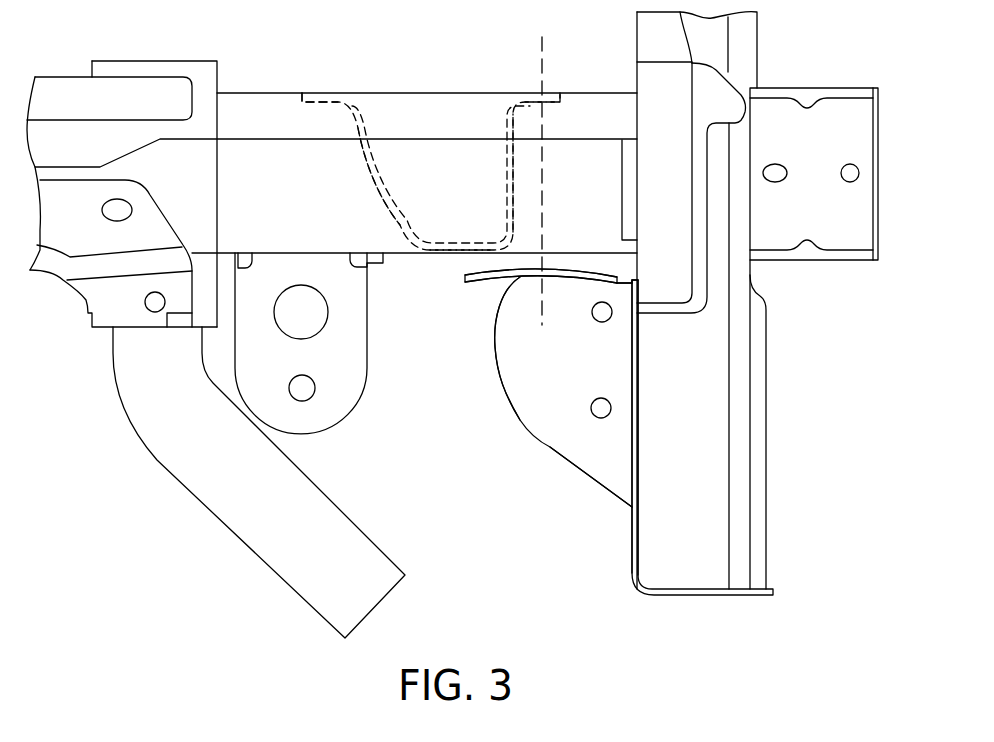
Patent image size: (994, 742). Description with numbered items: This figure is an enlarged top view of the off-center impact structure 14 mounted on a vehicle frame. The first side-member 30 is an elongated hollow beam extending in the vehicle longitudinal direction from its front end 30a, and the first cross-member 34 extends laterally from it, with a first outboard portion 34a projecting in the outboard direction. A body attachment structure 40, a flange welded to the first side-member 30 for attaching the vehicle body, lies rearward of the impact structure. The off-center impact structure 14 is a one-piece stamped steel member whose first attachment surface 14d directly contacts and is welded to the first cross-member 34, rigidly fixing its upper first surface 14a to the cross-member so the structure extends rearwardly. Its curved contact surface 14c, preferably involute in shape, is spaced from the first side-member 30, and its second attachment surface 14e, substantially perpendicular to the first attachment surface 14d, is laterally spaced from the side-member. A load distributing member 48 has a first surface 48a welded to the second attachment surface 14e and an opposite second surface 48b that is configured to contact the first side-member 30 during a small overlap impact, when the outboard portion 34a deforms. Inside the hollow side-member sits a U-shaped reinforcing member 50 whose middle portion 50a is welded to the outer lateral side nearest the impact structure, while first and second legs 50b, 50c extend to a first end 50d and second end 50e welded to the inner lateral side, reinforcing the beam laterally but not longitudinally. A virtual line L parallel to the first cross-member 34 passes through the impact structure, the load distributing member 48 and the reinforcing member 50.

The off-center impact structure 14 is at (552, 448).
The first surface 14a is at (615, 463).
The curved contact surface 14c is at (501, 390).
The first attachment surface 14d is at (634, 382).
The second attachment surface 14e is at (606, 277).
The first side-member 30 is at (252, 92).
The front end 30a is at (878, 135).
The first cross-member 34 is at (768, 460).
The first outboard portion 34a is at (708, 596).
The body attachment structure 40 is at (352, 407).
The load distributing member 48 is at (488, 275).
The first surface 48a is at (478, 283).
The second surface 48b is at (573, 271).
The reinforcing member 50 is at (389, 208).
The middle portion 50a is at (463, 242).
The first leg 50b is at (368, 172).
The second leg 50c is at (505, 173).
The first end 50d is at (316, 92).
The second end 50e is at (550, 97).
The virtual line L is at (541, 50).